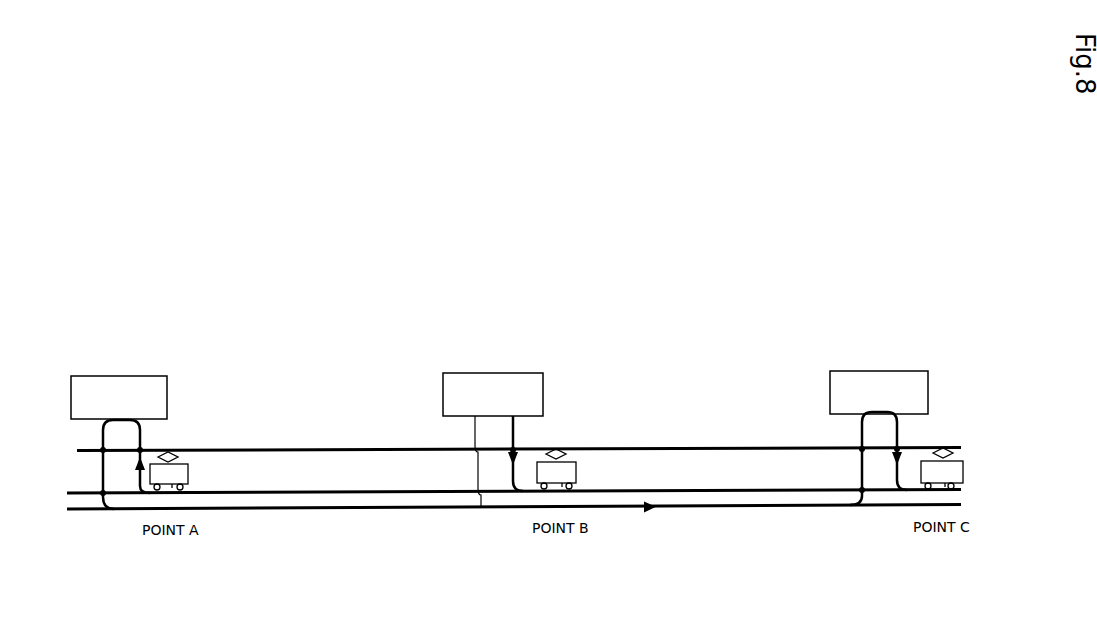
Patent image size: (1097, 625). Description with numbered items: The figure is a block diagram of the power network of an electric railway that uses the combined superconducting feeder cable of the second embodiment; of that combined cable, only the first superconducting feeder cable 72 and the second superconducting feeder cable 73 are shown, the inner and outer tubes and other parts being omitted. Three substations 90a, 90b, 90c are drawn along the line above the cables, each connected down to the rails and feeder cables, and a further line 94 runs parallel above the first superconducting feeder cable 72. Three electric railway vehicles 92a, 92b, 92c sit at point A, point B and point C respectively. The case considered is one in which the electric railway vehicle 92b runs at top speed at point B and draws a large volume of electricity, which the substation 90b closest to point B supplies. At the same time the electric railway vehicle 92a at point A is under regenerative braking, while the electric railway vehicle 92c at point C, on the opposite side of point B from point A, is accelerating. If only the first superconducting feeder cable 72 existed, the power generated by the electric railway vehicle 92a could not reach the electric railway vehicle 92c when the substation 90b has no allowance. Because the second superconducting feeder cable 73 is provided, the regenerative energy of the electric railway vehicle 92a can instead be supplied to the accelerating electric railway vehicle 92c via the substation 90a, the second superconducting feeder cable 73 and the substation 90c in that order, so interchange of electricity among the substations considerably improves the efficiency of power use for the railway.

The substation 90a is at (142, 376).
The substation 90b is at (494, 373).
The substation 90c is at (881, 371).
The electric railway vehicle 92a is at (189, 464).
The electric railway vehicle 92b is at (576, 462).
The electric railway vehicle 92c is at (963, 461).
The upper guide rail 94 is at (230, 450).
The first superconducting feeder cable 72 is at (231, 493).
The second superconducting feeder cable 73 is at (221, 509).